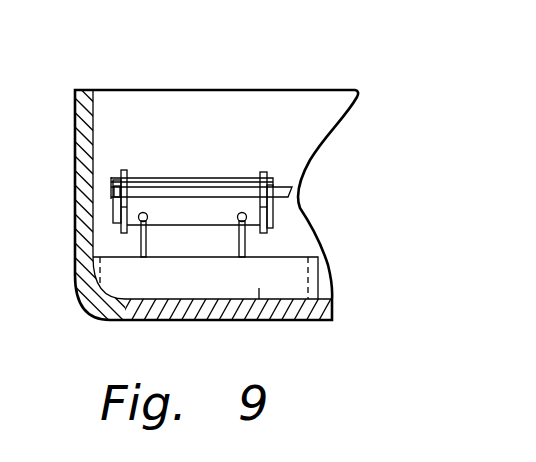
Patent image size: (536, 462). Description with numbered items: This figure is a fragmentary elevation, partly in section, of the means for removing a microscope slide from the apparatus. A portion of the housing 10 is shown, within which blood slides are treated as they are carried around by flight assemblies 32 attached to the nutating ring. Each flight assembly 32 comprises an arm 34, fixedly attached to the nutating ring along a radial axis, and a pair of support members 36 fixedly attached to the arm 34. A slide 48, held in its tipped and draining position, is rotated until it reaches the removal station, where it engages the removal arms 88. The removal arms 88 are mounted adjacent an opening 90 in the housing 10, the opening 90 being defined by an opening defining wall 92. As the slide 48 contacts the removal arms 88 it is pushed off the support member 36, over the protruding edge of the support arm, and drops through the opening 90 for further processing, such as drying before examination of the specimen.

The housing 10 is at (220, 90).
The flight assembly 32 is at (282, 185).
The arm 34 is at (147, 192).
The support member 36 is at (125, 233).
The slide 48 is at (200, 178).
The removal arms 88 is at (238, 242).
The opening 90 is at (270, 322).
The opening defining wall 92 is at (313, 280).